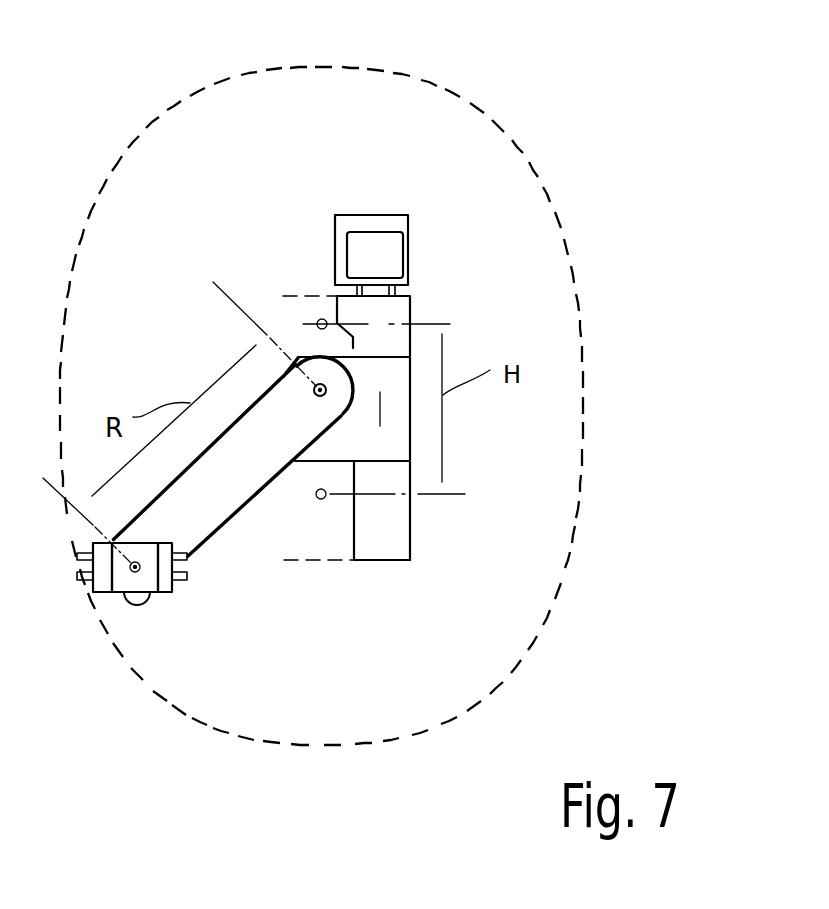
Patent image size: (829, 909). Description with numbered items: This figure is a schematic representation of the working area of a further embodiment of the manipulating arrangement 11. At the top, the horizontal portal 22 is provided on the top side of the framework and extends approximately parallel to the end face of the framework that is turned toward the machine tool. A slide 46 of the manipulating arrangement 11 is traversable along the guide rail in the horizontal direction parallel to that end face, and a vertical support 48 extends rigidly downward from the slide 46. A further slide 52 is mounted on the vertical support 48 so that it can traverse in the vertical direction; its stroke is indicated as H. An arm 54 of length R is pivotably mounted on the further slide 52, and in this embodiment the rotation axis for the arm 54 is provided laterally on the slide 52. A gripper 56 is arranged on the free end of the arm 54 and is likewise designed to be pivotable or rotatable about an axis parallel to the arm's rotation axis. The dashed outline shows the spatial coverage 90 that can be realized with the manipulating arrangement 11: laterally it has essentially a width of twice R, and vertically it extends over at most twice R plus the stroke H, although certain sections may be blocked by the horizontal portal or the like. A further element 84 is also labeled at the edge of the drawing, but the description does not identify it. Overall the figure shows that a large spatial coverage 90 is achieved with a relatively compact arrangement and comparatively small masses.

The manipulating arrangement 11 is at (592, 98).
The horizontal portal 22 is at (403, 212).
The slide 46 is at (385, 262).
The vertical support 48 is at (393, 543).
The further slide 52 is at (395, 448).
The arm 54 is at (202, 522).
The gripper 56 is at (118, 572).
The spatial coverage 90 is at (530, 640).
The element 84 is at (133, 902).